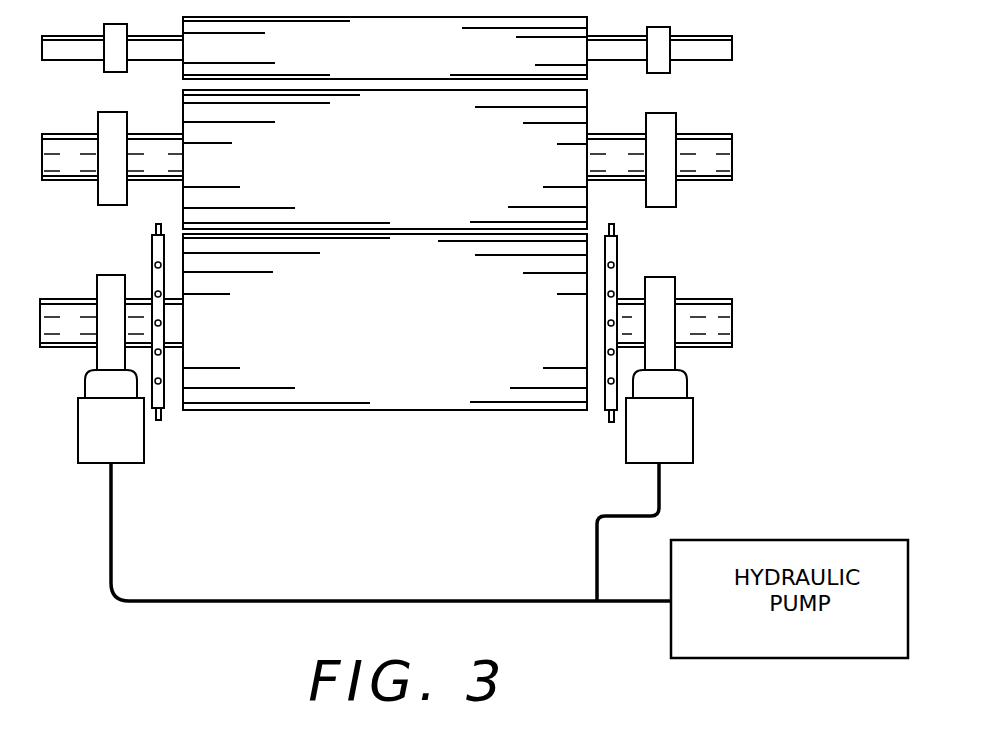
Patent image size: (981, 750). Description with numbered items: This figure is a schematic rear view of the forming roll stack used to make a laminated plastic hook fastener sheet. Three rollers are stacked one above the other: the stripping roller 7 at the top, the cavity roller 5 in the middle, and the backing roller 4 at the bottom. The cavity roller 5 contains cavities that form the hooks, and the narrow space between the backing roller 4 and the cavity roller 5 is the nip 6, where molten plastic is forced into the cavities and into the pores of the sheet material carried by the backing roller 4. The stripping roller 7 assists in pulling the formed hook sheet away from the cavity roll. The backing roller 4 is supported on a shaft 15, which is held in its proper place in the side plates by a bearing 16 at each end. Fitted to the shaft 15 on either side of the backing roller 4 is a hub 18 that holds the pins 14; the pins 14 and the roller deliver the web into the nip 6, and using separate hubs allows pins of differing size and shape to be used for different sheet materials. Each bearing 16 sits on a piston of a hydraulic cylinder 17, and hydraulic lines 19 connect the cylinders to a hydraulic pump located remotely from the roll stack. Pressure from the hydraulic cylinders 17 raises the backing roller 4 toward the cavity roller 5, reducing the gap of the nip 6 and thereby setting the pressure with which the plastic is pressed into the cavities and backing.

The backing roller 4 is at (385, 322).
The cavity roller 5 is at (385, 159).
The nip 6 is at (237, 237).
The stripping roller 7 is at (385, 48).
The pins 14 is at (163, 418).
The shaft 15 is at (732, 326).
The bearing 16 is at (658, 295).
The hydraulic cylinders 17 is at (120, 448).
The hub 18 is at (150, 238).
The hydraulic lines 19 is at (565, 598).